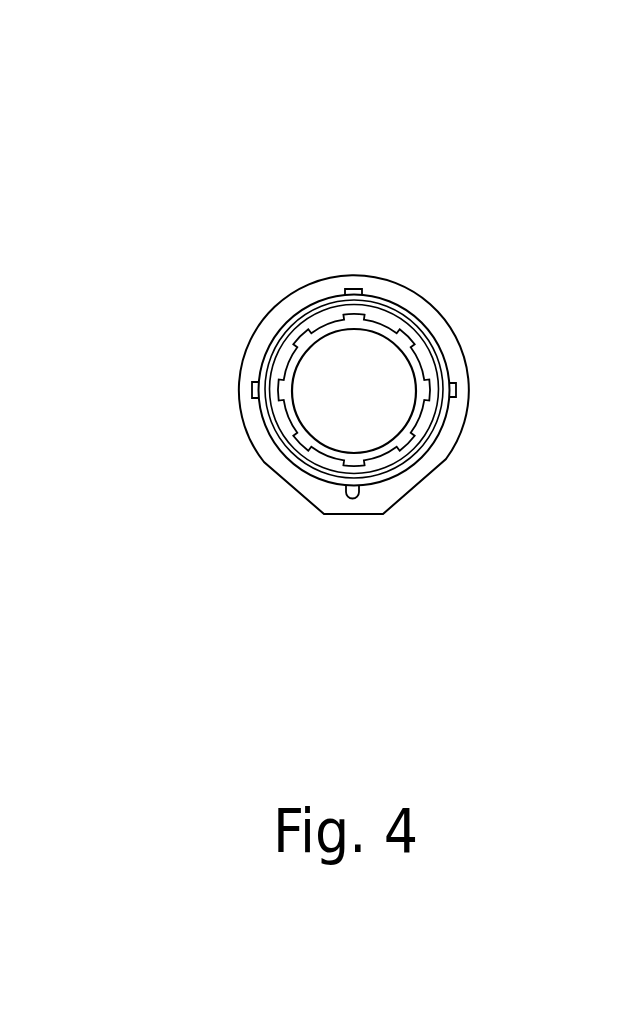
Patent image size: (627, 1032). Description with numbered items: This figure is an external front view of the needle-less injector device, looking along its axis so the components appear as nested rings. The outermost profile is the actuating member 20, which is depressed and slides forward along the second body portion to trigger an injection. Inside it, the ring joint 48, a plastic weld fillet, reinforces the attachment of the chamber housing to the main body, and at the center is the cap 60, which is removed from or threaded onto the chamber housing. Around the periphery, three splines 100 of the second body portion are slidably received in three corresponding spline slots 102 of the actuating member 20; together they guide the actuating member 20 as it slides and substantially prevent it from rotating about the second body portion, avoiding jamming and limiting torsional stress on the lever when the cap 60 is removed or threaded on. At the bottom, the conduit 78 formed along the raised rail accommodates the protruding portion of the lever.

The actuating member 20 is at (378, 291).
The ring joint 48 is at (314, 463).
The cap 60 is at (364, 383).
The conduit 78 is at (353, 496).
The splines 100 is at (359, 303).
The spline slots 102 is at (355, 288).